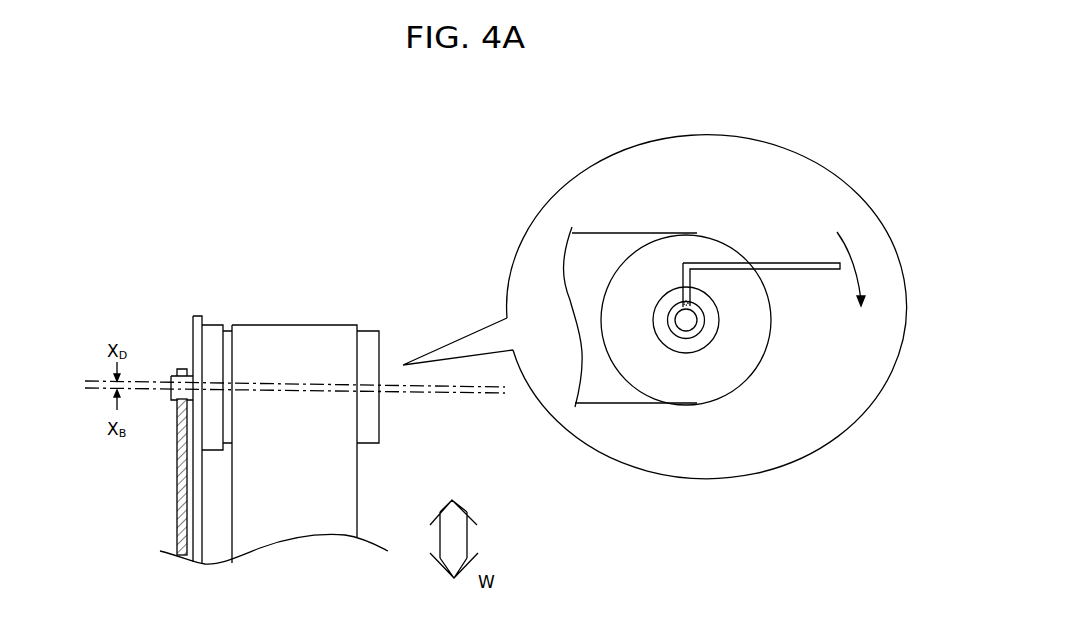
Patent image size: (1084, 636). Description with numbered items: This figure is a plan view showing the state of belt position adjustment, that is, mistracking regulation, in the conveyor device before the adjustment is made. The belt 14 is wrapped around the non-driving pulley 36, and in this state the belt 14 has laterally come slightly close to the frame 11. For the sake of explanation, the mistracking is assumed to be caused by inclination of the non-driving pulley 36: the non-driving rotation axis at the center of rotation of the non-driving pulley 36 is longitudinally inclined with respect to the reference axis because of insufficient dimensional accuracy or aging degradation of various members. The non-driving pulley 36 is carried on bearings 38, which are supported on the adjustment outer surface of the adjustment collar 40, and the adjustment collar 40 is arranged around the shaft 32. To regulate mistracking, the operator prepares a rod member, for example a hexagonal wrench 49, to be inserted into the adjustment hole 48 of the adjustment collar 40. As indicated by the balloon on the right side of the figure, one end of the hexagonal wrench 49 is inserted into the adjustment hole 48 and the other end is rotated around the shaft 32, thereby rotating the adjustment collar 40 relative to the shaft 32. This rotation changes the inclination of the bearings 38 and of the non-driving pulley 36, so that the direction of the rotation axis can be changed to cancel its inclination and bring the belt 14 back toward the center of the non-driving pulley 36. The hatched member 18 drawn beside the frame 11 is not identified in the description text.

The frame 11 is at (197, 316).
The belt 14 is at (260, 343).
The hatched strip 18 is at (176, 447).
The shaft 32 is at (687, 320).
The non-driving pulley 36 is at (368, 347).
The bearings 38 is at (700, 342).
The adjustment collar 40 is at (704, 312).
The adjustment hole 48 is at (684, 302).
The hexagonal wrench 49 is at (763, 263).